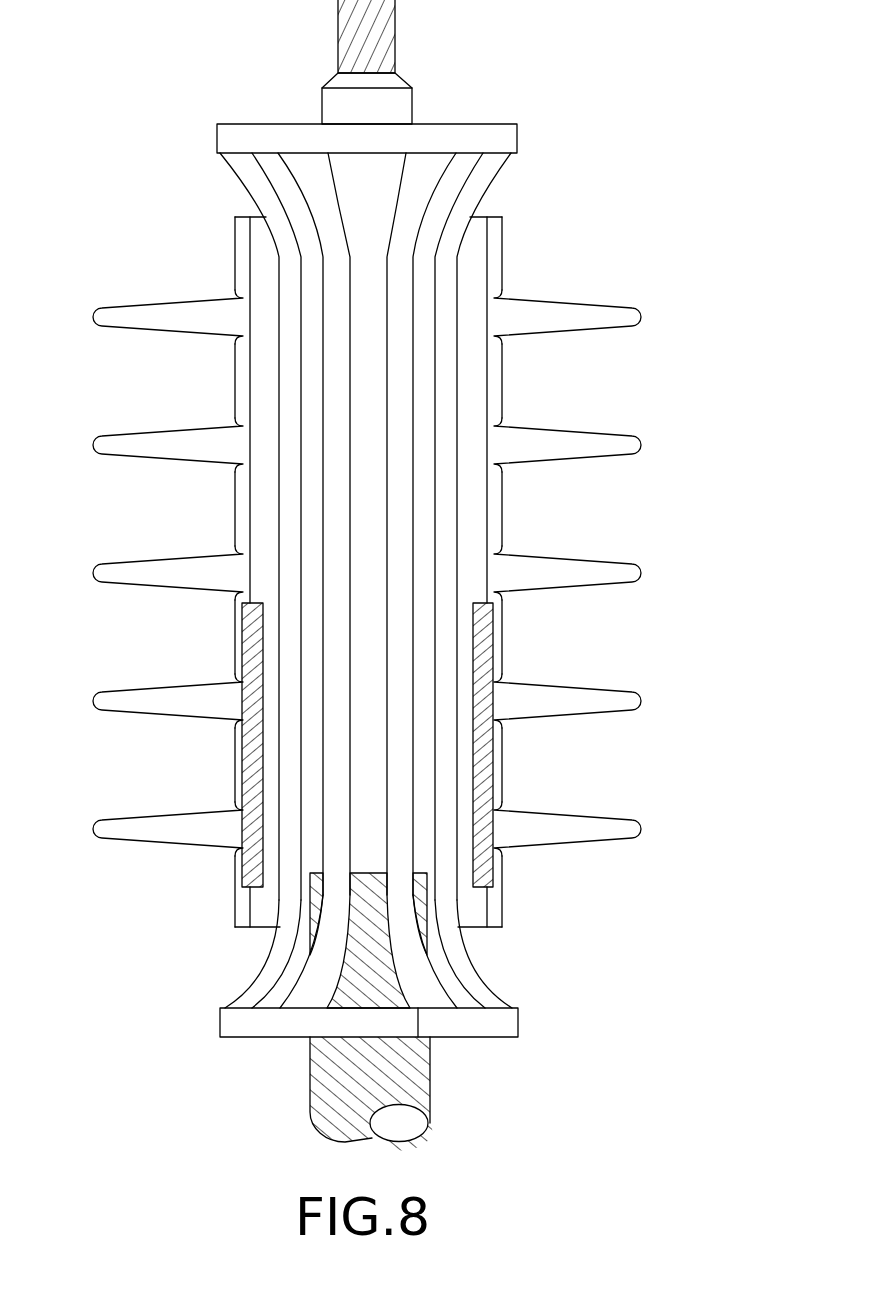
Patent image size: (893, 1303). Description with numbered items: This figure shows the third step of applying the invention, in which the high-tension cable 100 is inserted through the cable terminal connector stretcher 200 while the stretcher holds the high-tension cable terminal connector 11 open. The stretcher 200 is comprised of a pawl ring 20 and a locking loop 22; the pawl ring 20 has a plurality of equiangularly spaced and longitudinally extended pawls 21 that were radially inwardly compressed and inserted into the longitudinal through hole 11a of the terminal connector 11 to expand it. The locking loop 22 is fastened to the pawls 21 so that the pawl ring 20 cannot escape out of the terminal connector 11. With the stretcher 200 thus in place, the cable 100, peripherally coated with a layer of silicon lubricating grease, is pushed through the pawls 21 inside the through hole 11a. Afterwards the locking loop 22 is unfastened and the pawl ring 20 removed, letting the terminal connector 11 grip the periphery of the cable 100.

The cable terminal connector stretcher 200 is at (218, 117).
The high-tension cable 100 is at (398, 108).
The pawl ring 20 is at (428, 135).
The high-tension cable terminal connector 11 is at (502, 312).
The longitudinal through hole 11a is at (465, 405).
The pawls 21 is at (478, 968).
The locking loop 22 is at (473, 1028).